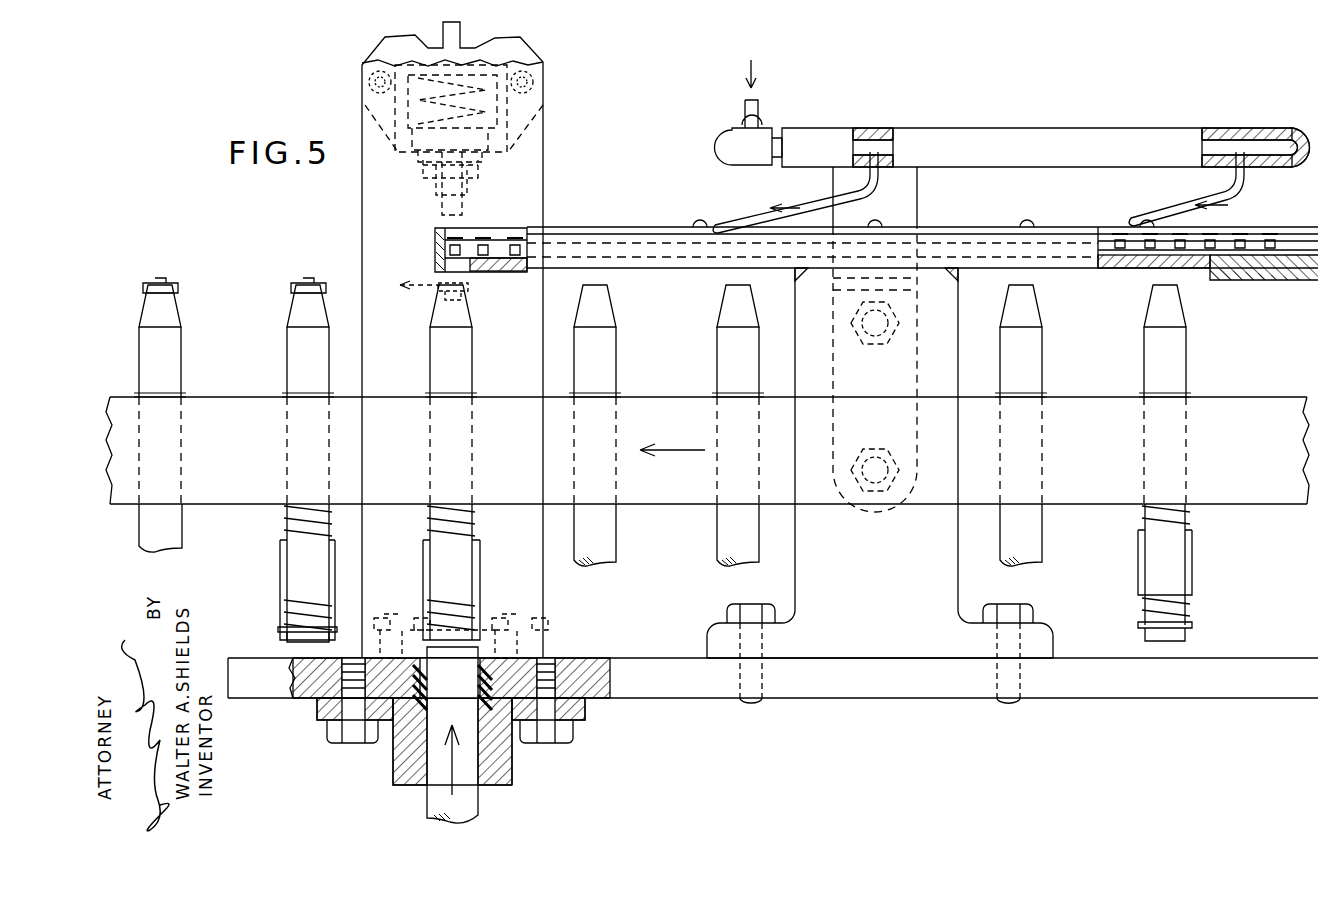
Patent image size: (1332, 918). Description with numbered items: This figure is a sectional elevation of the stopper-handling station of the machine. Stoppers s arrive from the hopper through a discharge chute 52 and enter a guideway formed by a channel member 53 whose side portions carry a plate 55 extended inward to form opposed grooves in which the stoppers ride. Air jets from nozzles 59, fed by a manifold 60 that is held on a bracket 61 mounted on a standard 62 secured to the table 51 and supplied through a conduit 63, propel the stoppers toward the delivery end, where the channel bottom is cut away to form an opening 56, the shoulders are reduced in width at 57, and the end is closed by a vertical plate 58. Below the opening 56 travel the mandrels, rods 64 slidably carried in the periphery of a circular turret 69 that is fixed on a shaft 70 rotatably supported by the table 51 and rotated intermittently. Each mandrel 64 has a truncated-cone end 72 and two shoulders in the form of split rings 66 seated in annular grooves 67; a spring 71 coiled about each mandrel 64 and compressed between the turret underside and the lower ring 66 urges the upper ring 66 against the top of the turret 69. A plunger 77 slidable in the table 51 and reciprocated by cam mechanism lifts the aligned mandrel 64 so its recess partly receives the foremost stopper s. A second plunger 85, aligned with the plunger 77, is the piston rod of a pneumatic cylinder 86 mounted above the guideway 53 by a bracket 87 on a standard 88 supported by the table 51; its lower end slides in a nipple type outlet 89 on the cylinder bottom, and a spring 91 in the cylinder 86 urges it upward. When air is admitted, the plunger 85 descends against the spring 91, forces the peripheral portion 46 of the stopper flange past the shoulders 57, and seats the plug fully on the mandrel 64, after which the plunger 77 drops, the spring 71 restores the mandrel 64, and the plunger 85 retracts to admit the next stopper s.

The peripheral portion 46 is at (455, 240).
The table 51 is at (1100, 694).
The discharge chute 52 is at (1276, 280).
The channel member 53 is at (1115, 268).
The plate 55 is at (483, 230).
The opening 56 is at (465, 270).
The reduced shoulders 57 is at (445, 226).
The vertical plate 58 is at (445, 249).
The nozzles 59 is at (735, 206).
The manifold 60 is at (1015, 128).
The bracket 61 is at (917, 196).
The standard 62 is at (880, 485).
The conduit 63 is at (758, 108).
The mandrel 64 is at (329, 368).
The split ring 66 is at (280, 628).
The annular groove 67 is at (292, 635).
The turret 69 is at (663, 416).
The shaft 70 is at (512, 760).
The spring 71 is at (280, 543).
The truncated cone shape 72 is at (326, 318).
The plunger 77 is at (478, 805).
The plunger 85 is at (465, 208).
The cylinder 86 is at (507, 100).
The bracket 87 is at (490, 95).
The standard 88 is at (543, 179).
The nipple type outlet 89 is at (436, 182).
The spring 91 is at (480, 125).
The stopper S is at (1255, 235).